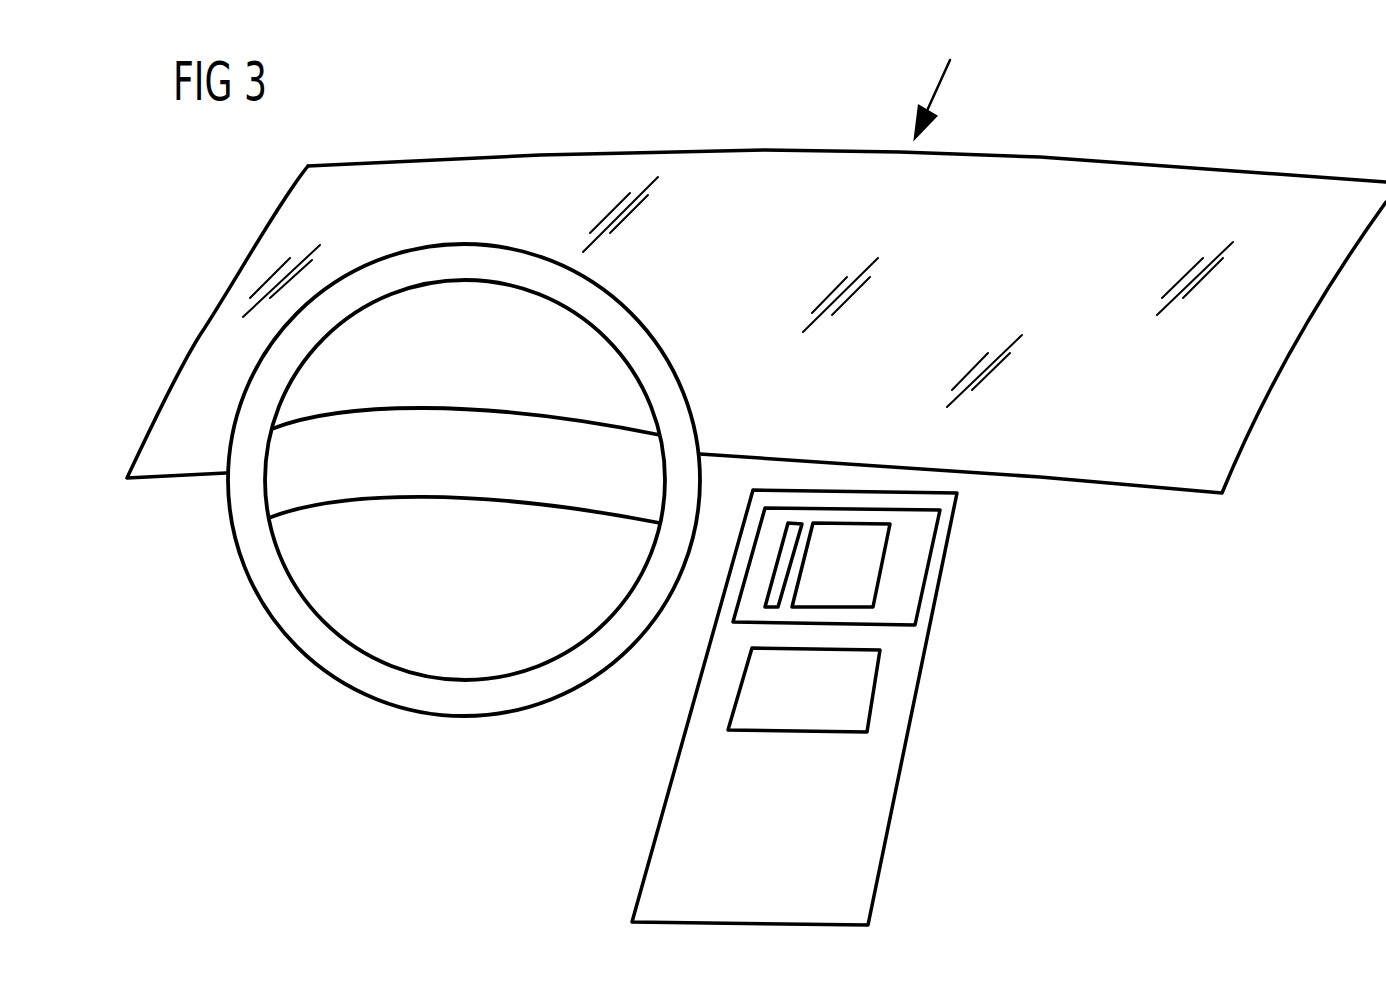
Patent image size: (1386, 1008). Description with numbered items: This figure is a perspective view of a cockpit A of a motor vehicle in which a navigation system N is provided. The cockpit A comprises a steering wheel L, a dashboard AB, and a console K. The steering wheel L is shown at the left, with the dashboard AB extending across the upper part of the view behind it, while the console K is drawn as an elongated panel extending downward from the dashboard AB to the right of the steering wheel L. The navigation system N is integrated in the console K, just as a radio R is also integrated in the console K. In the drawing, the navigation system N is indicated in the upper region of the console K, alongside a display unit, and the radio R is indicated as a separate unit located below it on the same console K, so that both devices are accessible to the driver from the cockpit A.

The cockpit A is at (938, 80).
The dashboard AB is at (773, 180).
The steering wheel L is at (637, 340).
The console K is at (873, 805).
The navigation system N is at (795, 527).
The radio R is at (795, 717).